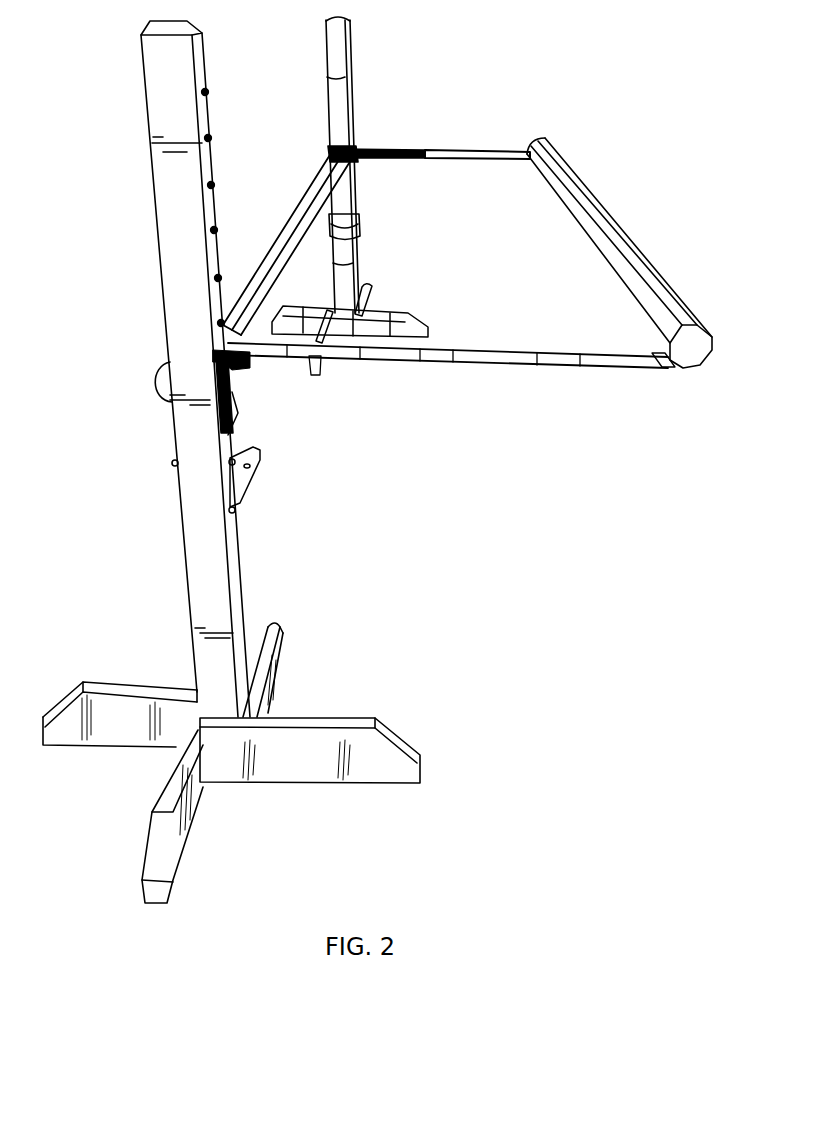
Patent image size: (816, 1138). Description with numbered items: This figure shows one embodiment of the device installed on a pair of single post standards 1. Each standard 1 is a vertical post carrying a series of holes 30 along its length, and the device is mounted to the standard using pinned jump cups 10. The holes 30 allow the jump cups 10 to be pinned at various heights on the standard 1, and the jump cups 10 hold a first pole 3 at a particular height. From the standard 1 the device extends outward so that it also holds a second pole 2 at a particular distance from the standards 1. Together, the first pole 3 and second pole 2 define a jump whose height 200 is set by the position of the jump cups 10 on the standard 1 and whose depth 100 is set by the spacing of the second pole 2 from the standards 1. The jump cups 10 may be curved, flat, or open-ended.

The standard 1 is at (172, 285).
The second pole 2 is at (608, 243).
The first pole 3 is at (322, 172).
The pinned jump cup 10 is at (366, 167).
The holes 30 is at (219, 231).
The depth 100 is at (672, 375).
The height 200 is at (253, 377).